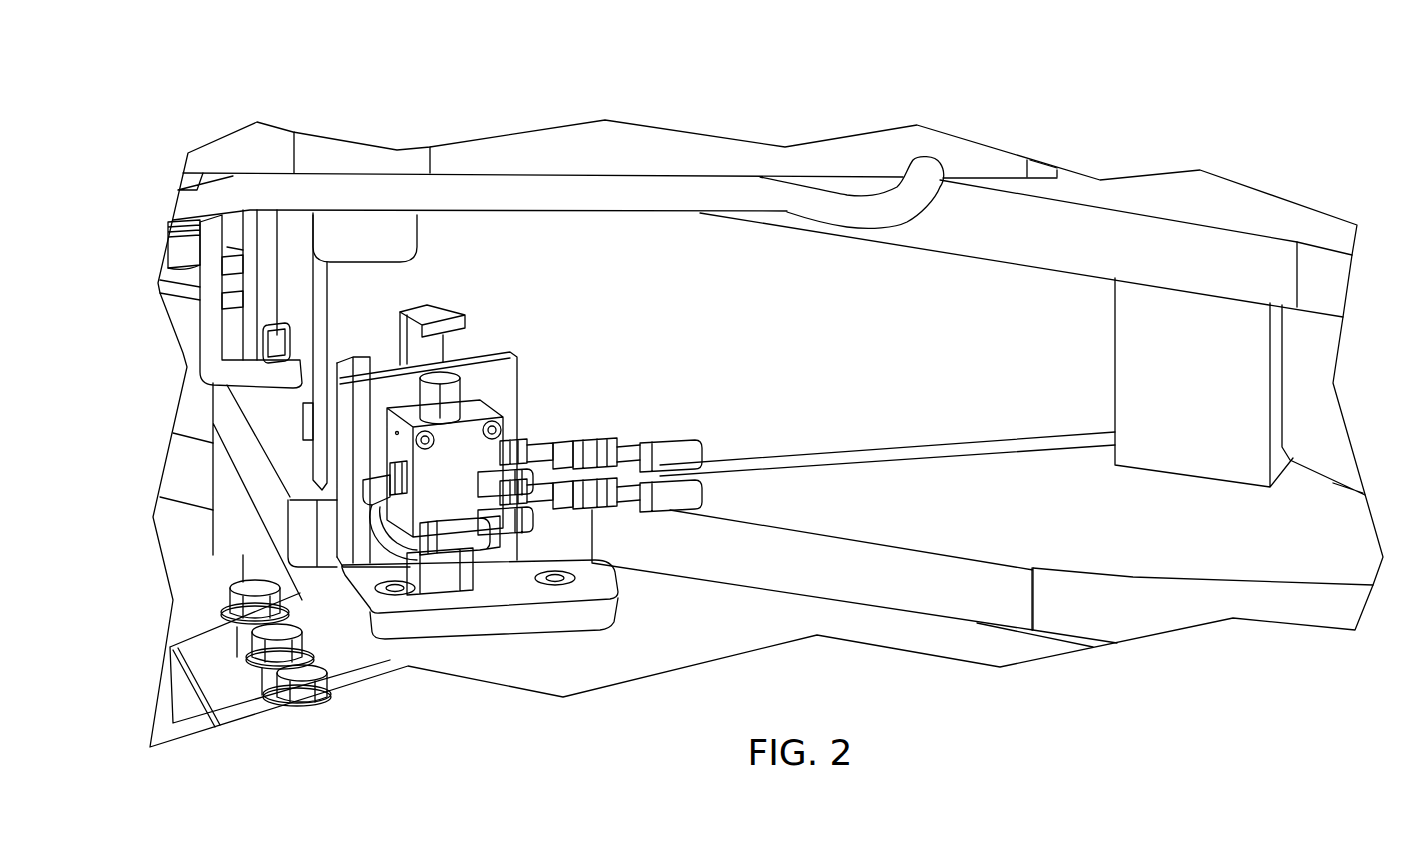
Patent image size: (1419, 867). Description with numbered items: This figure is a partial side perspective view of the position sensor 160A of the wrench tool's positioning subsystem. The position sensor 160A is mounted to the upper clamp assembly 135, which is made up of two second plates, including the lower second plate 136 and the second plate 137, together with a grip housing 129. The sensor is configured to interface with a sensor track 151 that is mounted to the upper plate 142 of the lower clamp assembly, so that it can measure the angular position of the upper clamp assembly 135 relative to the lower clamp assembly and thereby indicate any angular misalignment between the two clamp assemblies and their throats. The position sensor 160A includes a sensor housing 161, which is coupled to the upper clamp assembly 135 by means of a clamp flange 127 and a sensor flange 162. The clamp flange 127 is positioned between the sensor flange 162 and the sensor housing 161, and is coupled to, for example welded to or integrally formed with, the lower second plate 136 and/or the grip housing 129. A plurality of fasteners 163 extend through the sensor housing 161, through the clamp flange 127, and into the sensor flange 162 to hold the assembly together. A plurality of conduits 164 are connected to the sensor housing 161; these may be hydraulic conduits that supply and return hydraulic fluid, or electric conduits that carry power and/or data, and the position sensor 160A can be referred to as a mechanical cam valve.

The clamp flange 127 is at (379, 400).
The grip housing 129 is at (697, 257).
The upper clamp assembly 135 is at (1190, 247).
The lower second plate 136 is at (1180, 603).
The second plate 137 is at (1098, 197).
The upper plate 142 is at (743, 617).
The sensor track 151 is at (513, 588).
The position sensor 160A is at (506, 419).
The sensor housing 161 is at (393, 470).
The sensor flange 162 is at (450, 311).
The fasteners 163 is at (497, 418).
The conduits 164 is at (392, 485).